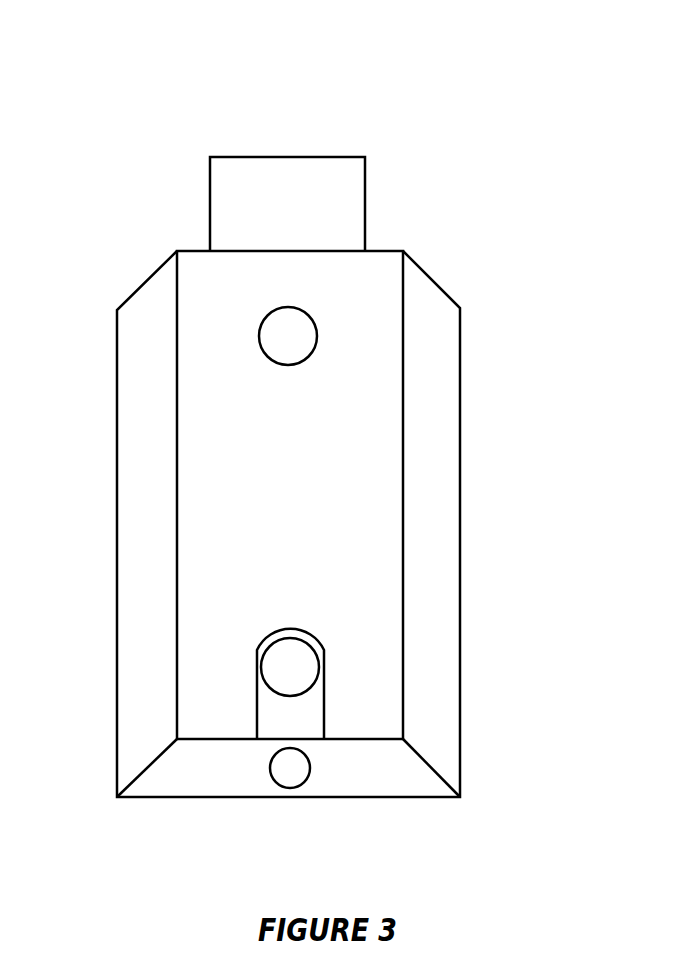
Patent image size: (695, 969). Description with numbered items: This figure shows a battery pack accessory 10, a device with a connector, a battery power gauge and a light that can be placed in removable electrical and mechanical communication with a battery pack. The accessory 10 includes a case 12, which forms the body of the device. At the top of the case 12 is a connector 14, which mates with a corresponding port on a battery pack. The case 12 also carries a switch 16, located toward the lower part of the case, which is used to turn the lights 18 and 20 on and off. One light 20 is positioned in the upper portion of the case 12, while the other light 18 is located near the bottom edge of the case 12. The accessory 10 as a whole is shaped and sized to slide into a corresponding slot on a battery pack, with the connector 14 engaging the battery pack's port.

The battery pack accessory 10 is at (333, 439).
The case 12 is at (345, 524).
The connector 14 is at (373, 179).
The switch 16 is at (412, 629).
The light 18 is at (453, 806).
The light 20 is at (397, 274).